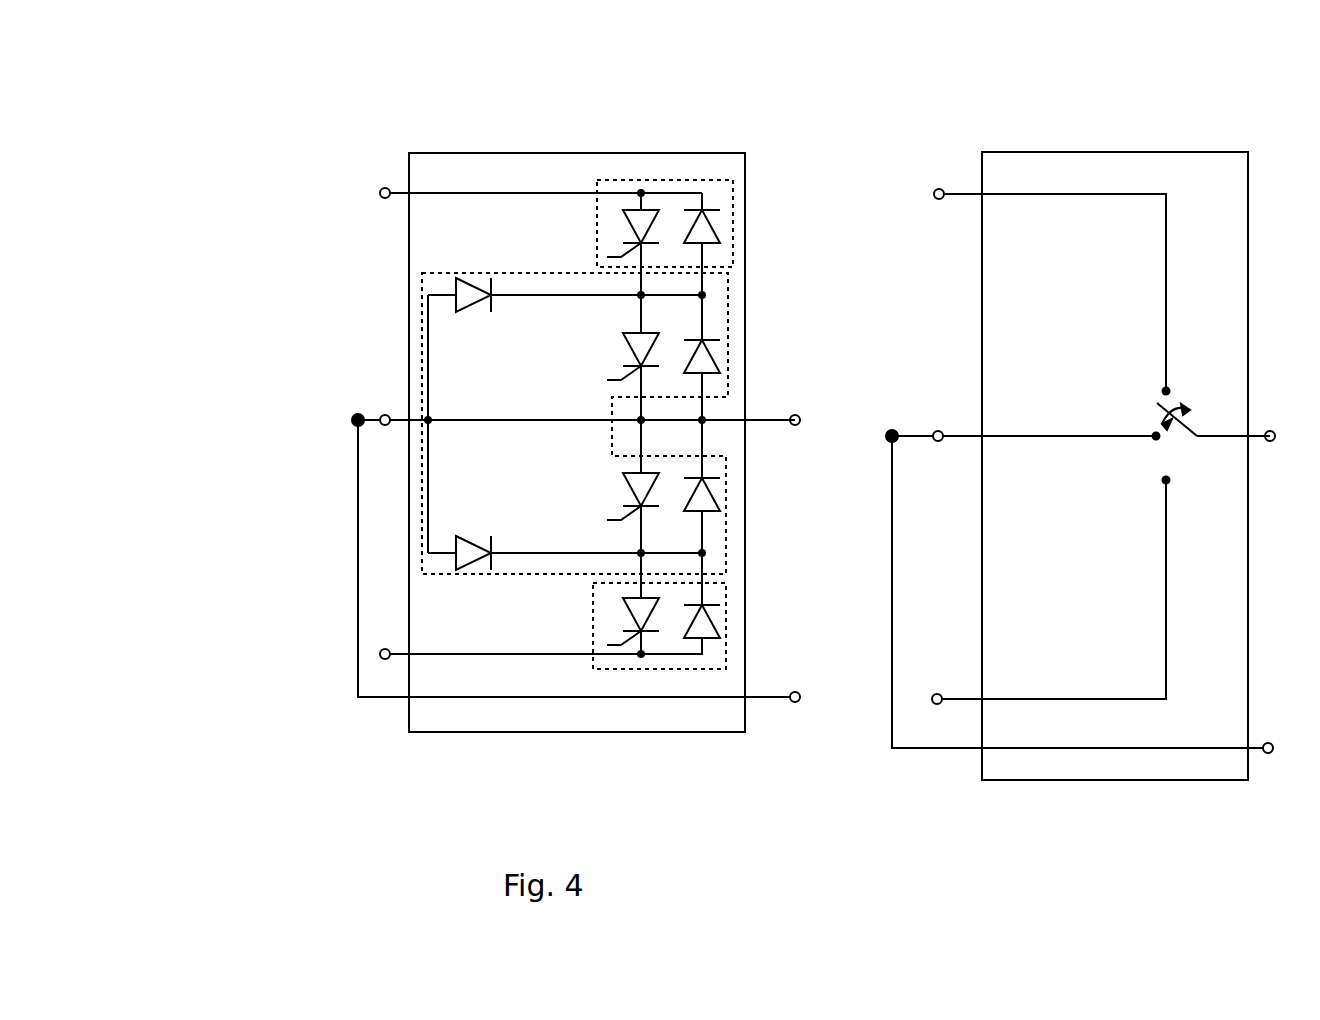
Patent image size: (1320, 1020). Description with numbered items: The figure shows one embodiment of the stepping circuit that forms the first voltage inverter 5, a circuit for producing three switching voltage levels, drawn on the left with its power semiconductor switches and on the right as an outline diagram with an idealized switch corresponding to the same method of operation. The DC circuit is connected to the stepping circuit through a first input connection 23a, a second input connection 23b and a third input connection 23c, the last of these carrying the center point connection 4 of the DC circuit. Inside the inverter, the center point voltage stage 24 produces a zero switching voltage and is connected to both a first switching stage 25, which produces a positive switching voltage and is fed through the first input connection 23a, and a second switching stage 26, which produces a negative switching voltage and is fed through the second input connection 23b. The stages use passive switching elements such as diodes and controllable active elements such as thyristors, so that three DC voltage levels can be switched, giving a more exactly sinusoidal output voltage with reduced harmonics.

The center point connection 4 is at (354, 416).
The first voltage inverter 5 is at (607, 151).
The first input connection 23a is at (380, 190).
The second input connection 23b is at (380, 651).
The third input connection 23c is at (354, 424).
The center point voltage stage 24 is at (566, 578).
The first switching stage 25 is at (701, 179).
The second switching stage 26 is at (661, 673).